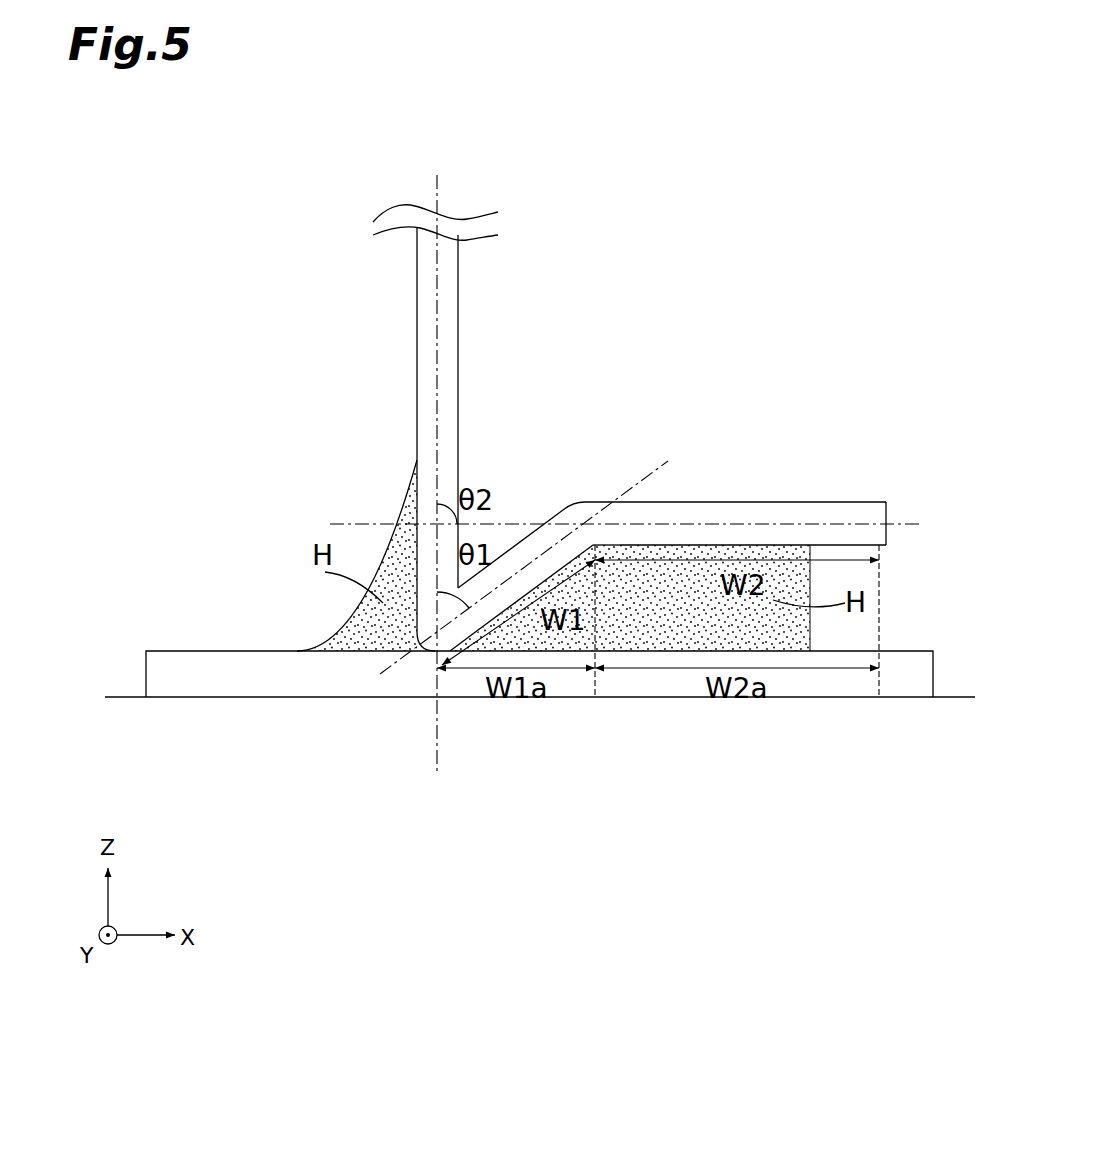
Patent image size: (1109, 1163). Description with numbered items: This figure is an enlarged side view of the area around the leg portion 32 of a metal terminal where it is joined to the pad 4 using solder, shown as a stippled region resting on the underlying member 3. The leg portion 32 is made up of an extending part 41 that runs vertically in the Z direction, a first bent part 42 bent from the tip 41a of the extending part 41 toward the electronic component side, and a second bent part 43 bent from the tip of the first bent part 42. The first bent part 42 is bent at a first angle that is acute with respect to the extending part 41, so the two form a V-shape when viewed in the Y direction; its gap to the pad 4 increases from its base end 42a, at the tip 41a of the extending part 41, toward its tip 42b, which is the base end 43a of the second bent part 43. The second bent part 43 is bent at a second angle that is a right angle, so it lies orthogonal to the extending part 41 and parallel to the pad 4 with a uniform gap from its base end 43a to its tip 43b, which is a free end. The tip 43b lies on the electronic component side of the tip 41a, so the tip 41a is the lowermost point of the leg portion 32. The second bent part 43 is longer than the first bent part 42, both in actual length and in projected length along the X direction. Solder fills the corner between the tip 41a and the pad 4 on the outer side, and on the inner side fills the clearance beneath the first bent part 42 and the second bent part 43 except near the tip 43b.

The substrate 3 is at (130, 695).
The pad 4 is at (175, 660).
The leg portion 32 is at (335, 270).
The extending part 41 is at (425, 377).
The tip of the extending part 41a is at (432, 645).
The first bent part 42 is at (524, 545).
The base end of the first bent part 42a is at (443, 655).
The tip of the first bent part 42b is at (563, 527).
The second bent part 43 is at (740, 520).
The base end of the second bent part 43a is at (616, 520).
The tip of the second bent part 43b is at (870, 510).